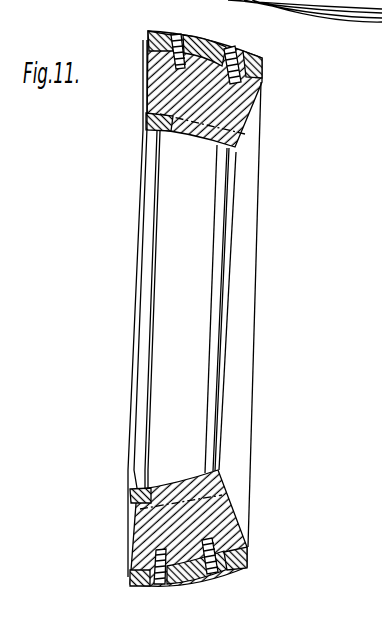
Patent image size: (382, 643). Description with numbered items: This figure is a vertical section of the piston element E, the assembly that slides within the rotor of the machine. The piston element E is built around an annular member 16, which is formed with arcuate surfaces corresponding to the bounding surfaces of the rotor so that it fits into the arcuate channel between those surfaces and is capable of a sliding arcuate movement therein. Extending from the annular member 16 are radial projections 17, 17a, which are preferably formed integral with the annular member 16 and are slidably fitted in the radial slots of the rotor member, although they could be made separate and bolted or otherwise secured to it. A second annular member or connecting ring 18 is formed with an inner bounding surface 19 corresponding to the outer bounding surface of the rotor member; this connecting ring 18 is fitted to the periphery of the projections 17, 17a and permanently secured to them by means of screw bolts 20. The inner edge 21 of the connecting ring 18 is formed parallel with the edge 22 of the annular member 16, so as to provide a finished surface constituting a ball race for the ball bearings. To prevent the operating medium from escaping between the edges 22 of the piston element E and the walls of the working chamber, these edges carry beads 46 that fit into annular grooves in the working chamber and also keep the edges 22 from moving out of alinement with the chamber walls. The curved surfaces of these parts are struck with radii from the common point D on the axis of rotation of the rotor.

The annular member 16 is at (197, 223).
The radial projection 17 is at (218, 103).
The radial projection 17a is at (220, 508).
The connecting ring 18 is at (248, 58).
The inner bounding surface 19 is at (175, 53).
The screw bolt 20 is at (187, 43).
The inner edge 21 is at (260, 73).
The edge 22 is at (143, 132).
The bead 46 is at (147, 41).
The common point D is at (145, 308).
The piston element E is at (237, 310).